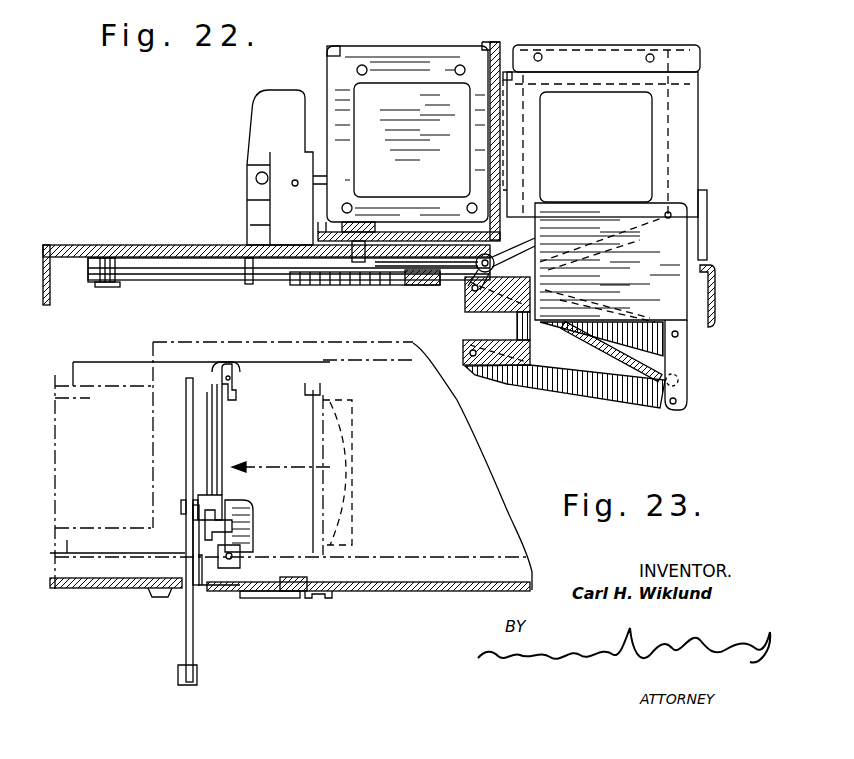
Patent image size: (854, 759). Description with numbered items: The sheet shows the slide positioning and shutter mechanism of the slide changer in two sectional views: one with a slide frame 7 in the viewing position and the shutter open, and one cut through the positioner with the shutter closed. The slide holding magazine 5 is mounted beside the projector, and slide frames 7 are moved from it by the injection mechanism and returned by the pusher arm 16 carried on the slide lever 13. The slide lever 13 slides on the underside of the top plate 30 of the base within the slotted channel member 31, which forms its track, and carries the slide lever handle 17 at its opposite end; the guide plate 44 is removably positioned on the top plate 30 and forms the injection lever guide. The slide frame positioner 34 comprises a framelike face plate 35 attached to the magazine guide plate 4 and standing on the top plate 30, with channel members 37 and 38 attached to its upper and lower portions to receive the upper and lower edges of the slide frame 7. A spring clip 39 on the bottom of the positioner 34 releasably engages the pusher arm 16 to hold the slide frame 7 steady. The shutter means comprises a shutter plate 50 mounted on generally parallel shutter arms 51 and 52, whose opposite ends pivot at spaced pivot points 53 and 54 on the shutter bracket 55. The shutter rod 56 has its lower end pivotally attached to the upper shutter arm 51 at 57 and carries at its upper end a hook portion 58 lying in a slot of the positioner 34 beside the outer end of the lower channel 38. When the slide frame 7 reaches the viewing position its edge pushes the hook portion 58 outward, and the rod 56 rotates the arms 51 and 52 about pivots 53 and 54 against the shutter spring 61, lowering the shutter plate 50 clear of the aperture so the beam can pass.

In FIG. 22, the magazine guide plate 4 is at (492, 44).
In FIG. 22, the slide holding magazine 5 is at (392, 57).
In FIG. 23, the slide frame 7 is at (224, 432).
In FIG. 23, the slide lever 13 is at (278, 593).
In FIG. 23, the pusher arm 16 is at (253, 540).
In FIG. 22, the slide lever handle 17 is at (257, 122).
In FIG. 23, the top plate 30 is at (125, 588).
In FIG. 23, the slotted channel member 31 is at (323, 594).
In FIG. 22, the slide frame positioner 34 is at (700, 102).
In FIG. 23, the face plate 35 is at (214, 363).
In FIG. 23, the upper channel member 37 is at (236, 392).
In FIG. 23, the lower channel member 38 is at (235, 516).
In FIG. 23, the spring clip 39 is at (238, 560).
In FIG. 22, the guide plate 44 is at (135, 245).
In FIG. 22, the shutter plate 50 is at (660, 282).
In FIG. 23, the shutter plate 50 is at (187, 447).
In FIG. 22, the upper shutter arm 51 is at (611, 328).
In FIG. 22, the lower shutter arm 52 is at (618, 396).
In FIG. 22, the pivot point 53 is at (470, 293).
In FIG. 22, the pivot point 54 is at (466, 352).
In FIG. 22, the shutter bracket 55 is at (527, 353).
In FIG. 22, the shutter rod 56 is at (565, 255).
In FIG. 23, the shutter rod 56 is at (193, 568).
In FIG. 22, the pivotal attachment 57 is at (480, 257).
In FIG. 23, the hook portion 58 is at (232, 530).
In FIG. 22, the shutter spring 61 is at (612, 356).